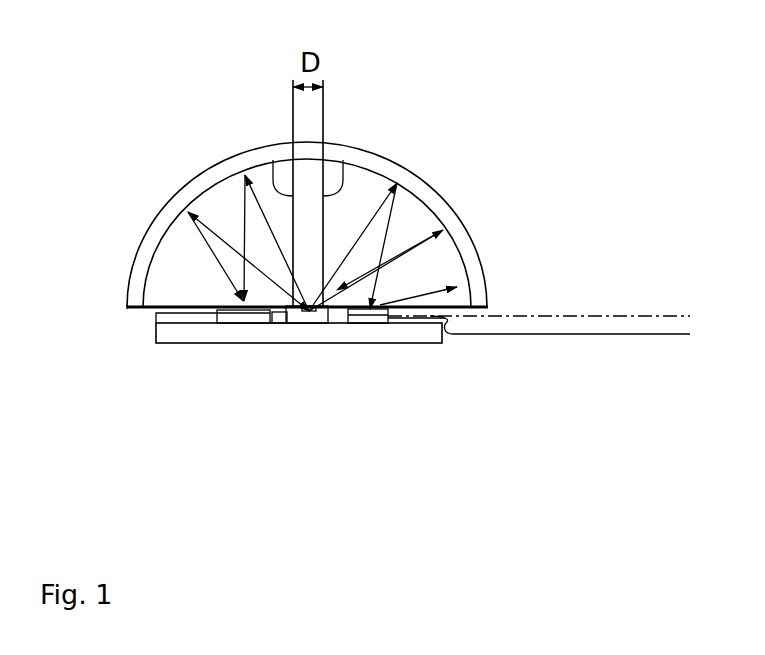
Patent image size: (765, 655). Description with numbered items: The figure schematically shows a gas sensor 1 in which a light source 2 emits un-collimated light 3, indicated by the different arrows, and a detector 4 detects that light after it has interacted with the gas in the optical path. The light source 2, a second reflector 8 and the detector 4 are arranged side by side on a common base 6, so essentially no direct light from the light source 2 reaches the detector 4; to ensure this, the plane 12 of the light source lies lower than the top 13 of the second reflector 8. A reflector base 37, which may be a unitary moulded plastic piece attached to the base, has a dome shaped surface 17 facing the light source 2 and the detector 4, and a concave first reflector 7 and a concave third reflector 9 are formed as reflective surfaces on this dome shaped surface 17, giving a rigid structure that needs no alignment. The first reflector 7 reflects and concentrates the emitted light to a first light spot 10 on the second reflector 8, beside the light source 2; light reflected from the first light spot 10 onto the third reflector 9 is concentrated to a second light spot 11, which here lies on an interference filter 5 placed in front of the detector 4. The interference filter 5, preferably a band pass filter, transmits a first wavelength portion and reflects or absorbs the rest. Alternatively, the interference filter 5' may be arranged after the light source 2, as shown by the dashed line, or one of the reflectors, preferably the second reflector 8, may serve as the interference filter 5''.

The gas sensor 1 is at (583, 112).
The light source 2 is at (374, 343).
The light 3 is at (443, 316).
The detector 4 is at (156, 323).
The interference filter 5 is at (181, 290).
The interference filter 5' is at (574, 334).
The interference filter 5'' is at (307, 387).
The common base 6 is at (179, 343).
The first reflector 7 is at (428, 200).
The second reflector 8 is at (312, 324).
The third reflector 9 is at (172, 207).
The first light spot 10 is at (262, 326).
The second light spot 11 is at (237, 307).
The plane of the light source 12 is at (627, 317).
The top of the second reflector 13 is at (345, 325).
The dome shaped surface 17 is at (375, 196).
The reflector base 37 is at (212, 168).